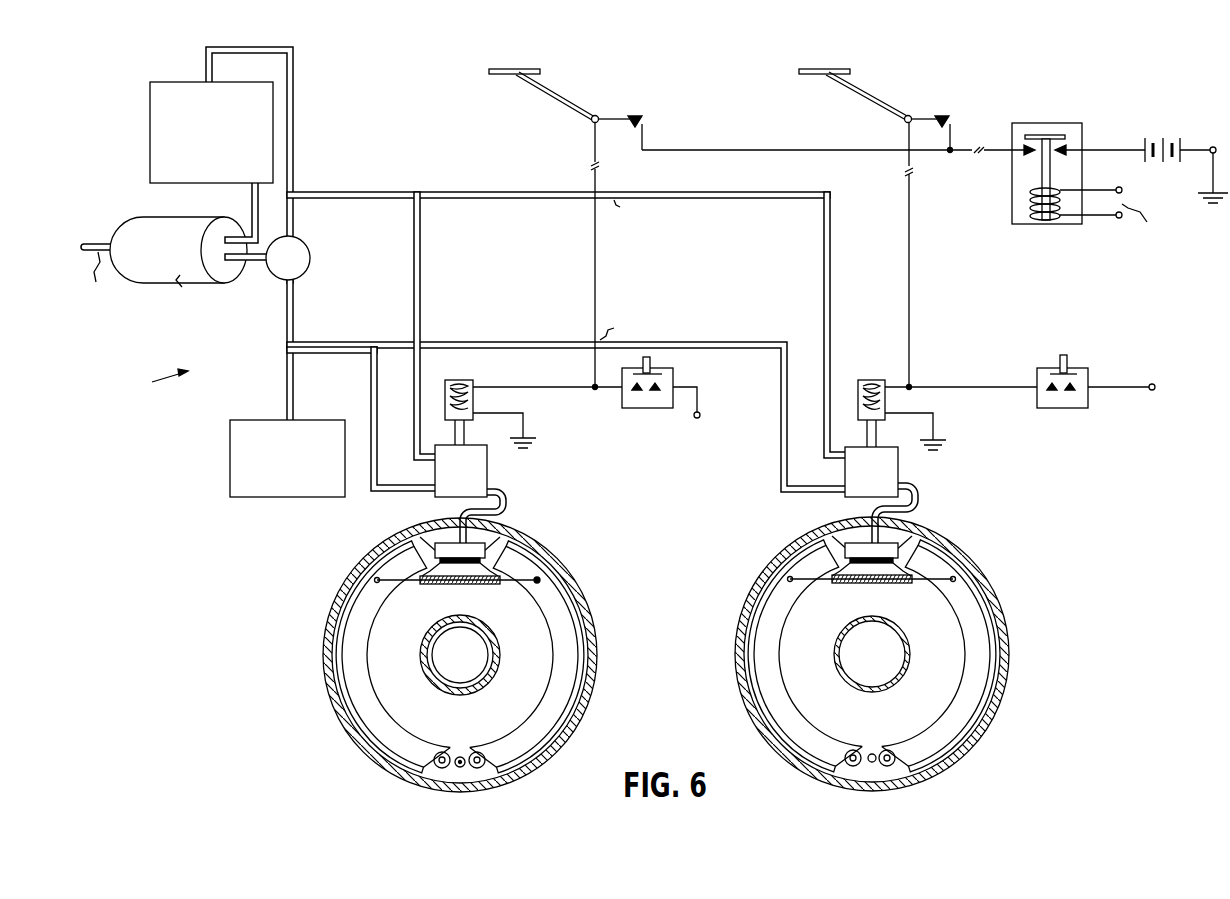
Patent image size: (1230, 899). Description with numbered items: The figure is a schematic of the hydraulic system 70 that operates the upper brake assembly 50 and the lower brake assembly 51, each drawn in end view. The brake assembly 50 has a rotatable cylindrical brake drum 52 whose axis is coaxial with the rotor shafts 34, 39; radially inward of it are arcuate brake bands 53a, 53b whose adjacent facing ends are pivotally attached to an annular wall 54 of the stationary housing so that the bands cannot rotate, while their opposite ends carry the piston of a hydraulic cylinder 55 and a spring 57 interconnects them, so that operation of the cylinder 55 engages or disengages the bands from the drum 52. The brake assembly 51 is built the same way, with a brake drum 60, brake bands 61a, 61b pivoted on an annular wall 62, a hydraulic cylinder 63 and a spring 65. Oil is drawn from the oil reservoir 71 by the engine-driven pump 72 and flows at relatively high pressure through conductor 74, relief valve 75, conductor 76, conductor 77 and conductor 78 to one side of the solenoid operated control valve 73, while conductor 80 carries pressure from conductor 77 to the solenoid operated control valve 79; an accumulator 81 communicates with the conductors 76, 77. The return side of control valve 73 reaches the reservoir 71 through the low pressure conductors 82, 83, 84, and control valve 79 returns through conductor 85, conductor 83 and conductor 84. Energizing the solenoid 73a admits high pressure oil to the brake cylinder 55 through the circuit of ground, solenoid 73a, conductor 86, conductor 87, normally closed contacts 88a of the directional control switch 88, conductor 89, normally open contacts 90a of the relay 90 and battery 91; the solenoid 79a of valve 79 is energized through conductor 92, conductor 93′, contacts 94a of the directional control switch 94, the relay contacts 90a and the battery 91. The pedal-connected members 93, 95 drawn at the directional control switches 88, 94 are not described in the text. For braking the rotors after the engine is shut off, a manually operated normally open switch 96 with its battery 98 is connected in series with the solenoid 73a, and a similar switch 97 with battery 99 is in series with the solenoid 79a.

The rotor shaft 34 is at (484, 655).
The rotor shaft 39 is at (678, 649).
The brake assembly 50 is at (449, 666).
The brake assembly 51 is at (874, 665).
The brake drum 52 is at (477, 655).
The brake band 53a is at (362, 655).
The brake band 53b is at (557, 655).
The annular wall 54 is at (459, 783).
The hydraulic cylinder 55 is at (460, 579).
The spring 57 is at (458, 595).
The brake drum 60 is at (888, 654).
The brake band 61a is at (772, 654).
The brake band 61b is at (975, 654).
The annular wall 62 is at (870, 781).
The hydraulic cylinder 63 is at (871, 577).
The spring 65 is at (872, 596).
The hydraulic system 70 is at (155, 382).
The oil reservoir 71 is at (157, 125).
The pump 72 is at (165, 222).
The solenoid operated control valve 73 is at (490, 470).
The solenoid 73a is at (475, 400).
The conductor 74 is at (262, 262).
The relief valve 75 is at (306, 253).
The conductor 76 is at (296, 306).
The conductor 77 is at (332, 353).
The conductor 78 is at (378, 416).
The solenoid operated control valve 79 is at (900, 478).
The solenoid 79a is at (886, 402).
The conductor 80 is at (497, 341).
The accumulator 81 is at (276, 498).
The conductor 82 is at (422, 314).
The conductor 83 is at (368, 201).
The conductor 84 is at (293, 131).
The conductor 85 is at (831, 308).
The conductor 86 is at (570, 392).
The conductor 87 is at (596, 287).
The directional control switch 88 is at (629, 116).
The normally closed contacts 88a is at (634, 125).
The conductor 89 is at (724, 150).
The relay 90 is at (1040, 172).
The normally open contacts 90a is at (1024, 146).
The battery 91 is at (1168, 140).
The conductor 92 is at (893, 384).
The right pedal arm 93 is at (560, 96).
The conductor 93′ is at (912, 259).
The directional control switch 94 is at (937, 116).
The contacts 94a is at (950, 120).
The left pedal arm 95 is at (872, 99).
The manually operated normally open switch 96 is at (642, 410).
The manually operated normally open switch 97 is at (1082, 366).
The battery 98 is at (703, 415).
The battery 99 is at (1153, 384).